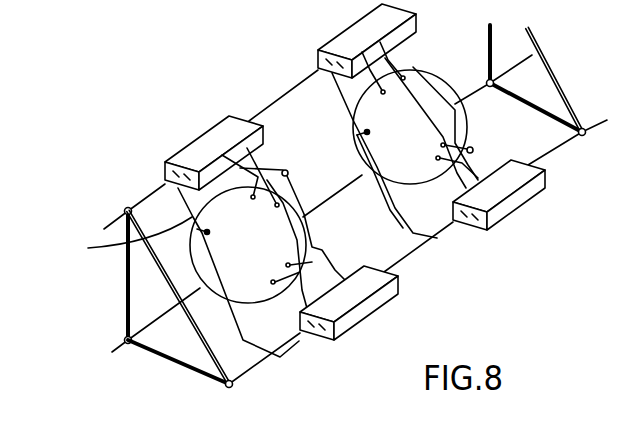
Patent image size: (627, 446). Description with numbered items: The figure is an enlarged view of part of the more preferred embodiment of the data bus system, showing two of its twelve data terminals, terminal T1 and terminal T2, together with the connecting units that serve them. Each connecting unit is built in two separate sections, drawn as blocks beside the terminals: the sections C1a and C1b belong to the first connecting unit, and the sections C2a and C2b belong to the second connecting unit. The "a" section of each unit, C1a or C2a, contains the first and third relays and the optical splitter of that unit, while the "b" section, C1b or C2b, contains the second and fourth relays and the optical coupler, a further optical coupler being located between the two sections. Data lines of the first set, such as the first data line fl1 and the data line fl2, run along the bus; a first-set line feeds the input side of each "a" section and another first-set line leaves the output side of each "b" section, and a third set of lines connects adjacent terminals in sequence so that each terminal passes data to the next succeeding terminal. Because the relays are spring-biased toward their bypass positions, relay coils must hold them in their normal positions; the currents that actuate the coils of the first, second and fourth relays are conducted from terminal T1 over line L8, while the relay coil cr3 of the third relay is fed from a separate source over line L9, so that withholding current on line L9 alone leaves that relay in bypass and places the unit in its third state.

The first section of connecting unit C1 C1a is at (217, 130).
The second section of connecting unit C1 C1b is at (383, 297).
The first section of connecting unit C2 C2a is at (533, 192).
The second section of connecting unit C2 C2b is at (340, 40).
The data terminal T1 is at (248, 245).
The data terminal T2 is at (410, 127).
The line L8 is at (388, 212).
The line L9 is at (342, 100).
The relay coil cr3 is at (289, 173).
The first data line fl1 is at (148, 195).
The first-set data line fl2 is at (250, 375).